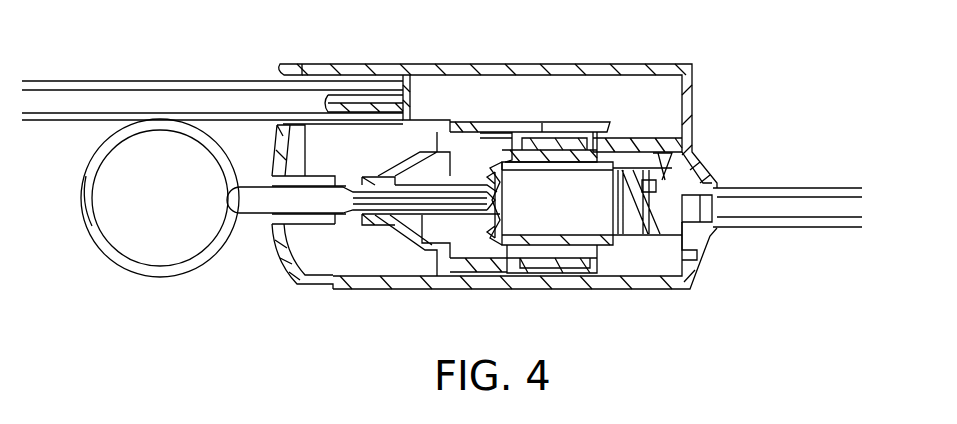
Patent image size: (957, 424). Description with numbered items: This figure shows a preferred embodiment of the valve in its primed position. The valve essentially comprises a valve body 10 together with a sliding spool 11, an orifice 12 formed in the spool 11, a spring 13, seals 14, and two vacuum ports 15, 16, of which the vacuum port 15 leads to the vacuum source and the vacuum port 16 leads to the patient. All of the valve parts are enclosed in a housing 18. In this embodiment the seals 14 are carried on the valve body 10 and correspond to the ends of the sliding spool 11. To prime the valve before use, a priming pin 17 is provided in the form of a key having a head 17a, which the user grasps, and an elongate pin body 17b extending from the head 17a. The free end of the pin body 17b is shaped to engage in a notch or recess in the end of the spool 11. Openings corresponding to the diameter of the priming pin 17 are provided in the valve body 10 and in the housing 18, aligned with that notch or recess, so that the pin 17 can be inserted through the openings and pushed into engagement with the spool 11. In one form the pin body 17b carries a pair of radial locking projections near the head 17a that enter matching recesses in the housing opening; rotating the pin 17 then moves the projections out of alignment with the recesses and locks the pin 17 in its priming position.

The valve body 10 is at (485, 290).
The spool 11 is at (560, 240).
The orifice 12 is at (560, 135).
The spring 13 is at (628, 245).
The seals 14 is at (505, 130).
The vacuum port 15 is at (65, 80).
The vacuum port 16 is at (800, 183).
The priming pin 17 is at (135, 277).
The head 17a is at (92, 235).
The pin body 17b is at (262, 214).
The housing 18 is at (318, 286).